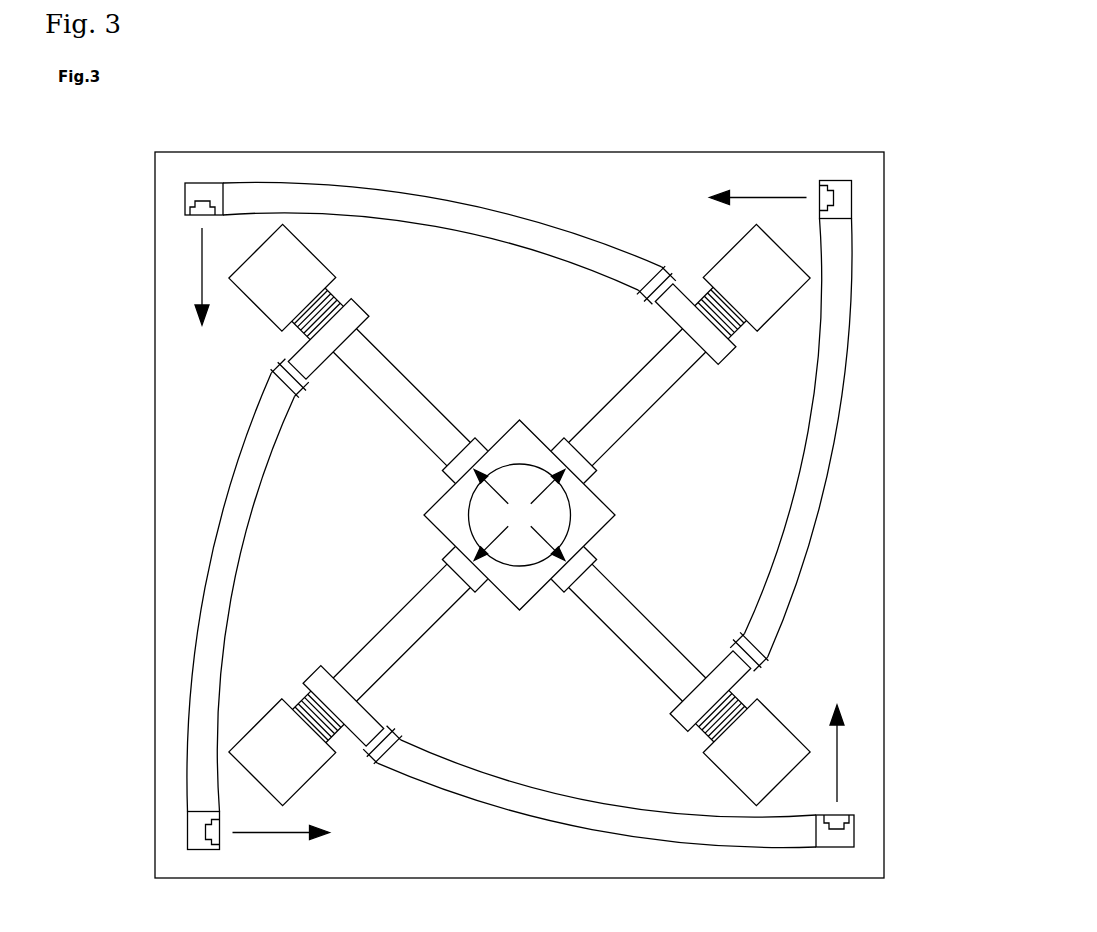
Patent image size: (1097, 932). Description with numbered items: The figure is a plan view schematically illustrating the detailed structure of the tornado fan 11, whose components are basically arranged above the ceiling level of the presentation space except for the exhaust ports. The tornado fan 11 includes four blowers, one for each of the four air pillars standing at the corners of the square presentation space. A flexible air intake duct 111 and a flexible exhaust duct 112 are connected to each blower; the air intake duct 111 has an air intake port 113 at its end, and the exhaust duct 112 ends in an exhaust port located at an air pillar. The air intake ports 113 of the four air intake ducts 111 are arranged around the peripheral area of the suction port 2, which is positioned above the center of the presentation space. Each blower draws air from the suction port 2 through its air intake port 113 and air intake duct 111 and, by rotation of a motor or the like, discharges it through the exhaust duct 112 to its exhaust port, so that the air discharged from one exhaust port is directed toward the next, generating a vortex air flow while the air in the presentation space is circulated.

The tornado fan 11 is at (540, 151).
The suction port 2 is at (553, 521).
The air intake duct 111 is at (418, 388).
The exhaust duct 112 is at (241, 561).
The air intake port 113 is at (458, 497).